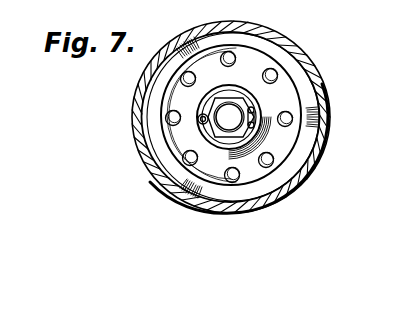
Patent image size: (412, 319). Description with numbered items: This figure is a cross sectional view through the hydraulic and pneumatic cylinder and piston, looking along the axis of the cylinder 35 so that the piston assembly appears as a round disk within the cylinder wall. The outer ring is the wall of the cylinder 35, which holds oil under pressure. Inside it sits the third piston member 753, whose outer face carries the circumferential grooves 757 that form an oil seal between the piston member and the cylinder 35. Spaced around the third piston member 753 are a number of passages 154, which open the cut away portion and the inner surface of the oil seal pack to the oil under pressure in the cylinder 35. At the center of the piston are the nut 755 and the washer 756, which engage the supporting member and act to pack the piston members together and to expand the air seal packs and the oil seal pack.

The cylinder 35 is at (306, 67).
The circumferential grooves 757 is at (305, 85).
The nut 755 is at (245, 107).
The washer 756 is at (258, 124).
The third piston member 753 is at (295, 140).
The passages 154 is at (239, 177).